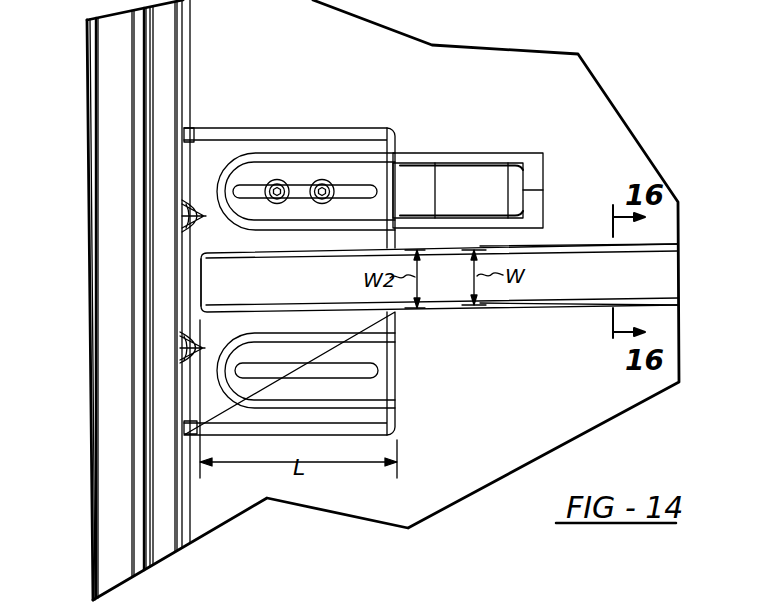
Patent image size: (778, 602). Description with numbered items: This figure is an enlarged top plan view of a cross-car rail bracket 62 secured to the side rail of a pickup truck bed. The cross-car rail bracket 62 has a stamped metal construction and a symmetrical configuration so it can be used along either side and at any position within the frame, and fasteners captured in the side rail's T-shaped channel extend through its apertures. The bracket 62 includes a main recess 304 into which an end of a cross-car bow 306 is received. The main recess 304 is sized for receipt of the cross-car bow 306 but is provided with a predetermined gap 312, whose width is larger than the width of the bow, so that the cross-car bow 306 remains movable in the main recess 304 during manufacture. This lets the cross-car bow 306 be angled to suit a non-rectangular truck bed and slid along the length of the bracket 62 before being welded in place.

The cross-car rail bracket 62 is at (297, 103).
The main recess 304 is at (313, 312).
The cross-car bow 306 is at (547, 278).
The predetermined gap 312 is at (207, 282).